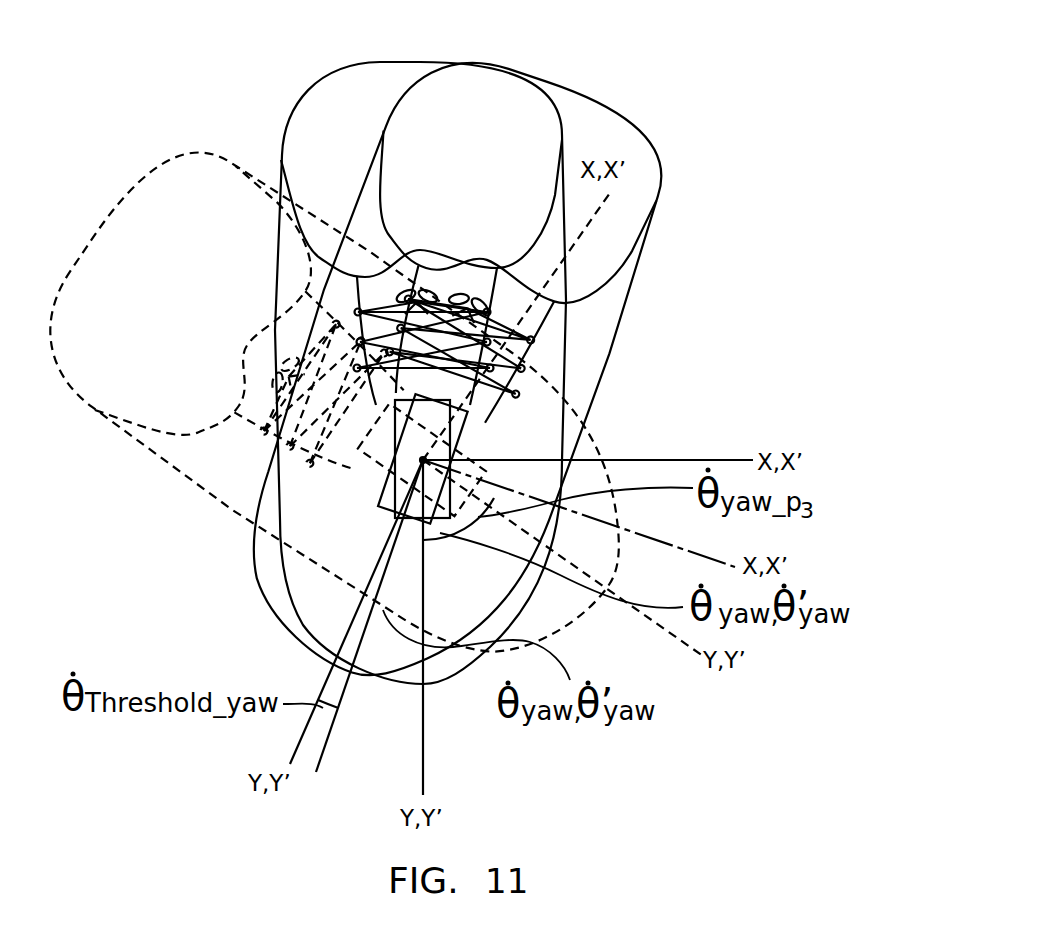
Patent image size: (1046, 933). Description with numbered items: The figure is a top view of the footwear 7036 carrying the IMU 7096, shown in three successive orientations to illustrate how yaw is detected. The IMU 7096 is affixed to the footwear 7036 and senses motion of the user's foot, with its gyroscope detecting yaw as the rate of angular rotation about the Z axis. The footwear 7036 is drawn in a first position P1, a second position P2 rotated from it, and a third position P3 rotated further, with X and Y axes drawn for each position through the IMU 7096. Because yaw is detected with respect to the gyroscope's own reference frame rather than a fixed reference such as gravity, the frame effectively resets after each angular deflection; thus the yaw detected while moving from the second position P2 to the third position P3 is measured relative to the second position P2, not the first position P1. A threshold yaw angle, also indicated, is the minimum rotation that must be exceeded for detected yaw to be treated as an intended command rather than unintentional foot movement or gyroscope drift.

The footwear 7036 is at (369, 359).
The IMU 7096 is at (396, 498).
The first position P1 is at (420, 373).
The second position P2 is at (448, 377).
The third position P3 is at (349, 413).